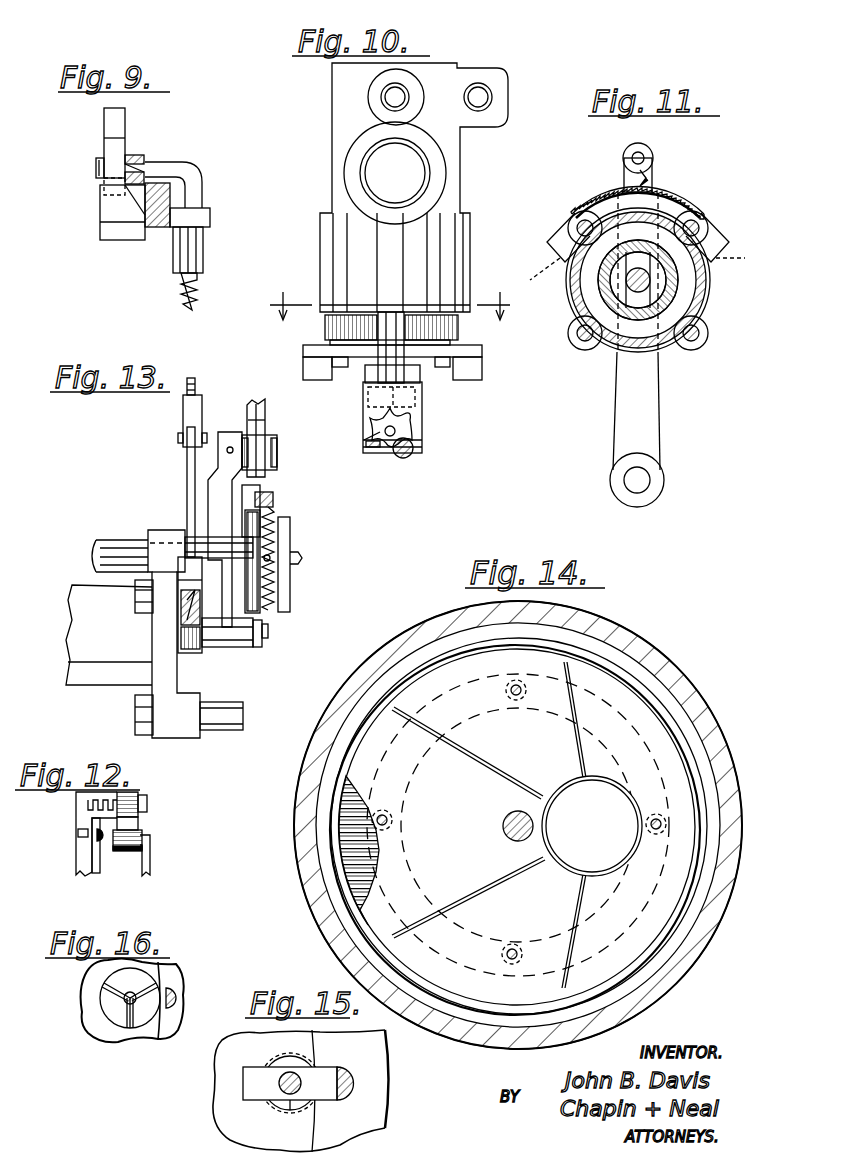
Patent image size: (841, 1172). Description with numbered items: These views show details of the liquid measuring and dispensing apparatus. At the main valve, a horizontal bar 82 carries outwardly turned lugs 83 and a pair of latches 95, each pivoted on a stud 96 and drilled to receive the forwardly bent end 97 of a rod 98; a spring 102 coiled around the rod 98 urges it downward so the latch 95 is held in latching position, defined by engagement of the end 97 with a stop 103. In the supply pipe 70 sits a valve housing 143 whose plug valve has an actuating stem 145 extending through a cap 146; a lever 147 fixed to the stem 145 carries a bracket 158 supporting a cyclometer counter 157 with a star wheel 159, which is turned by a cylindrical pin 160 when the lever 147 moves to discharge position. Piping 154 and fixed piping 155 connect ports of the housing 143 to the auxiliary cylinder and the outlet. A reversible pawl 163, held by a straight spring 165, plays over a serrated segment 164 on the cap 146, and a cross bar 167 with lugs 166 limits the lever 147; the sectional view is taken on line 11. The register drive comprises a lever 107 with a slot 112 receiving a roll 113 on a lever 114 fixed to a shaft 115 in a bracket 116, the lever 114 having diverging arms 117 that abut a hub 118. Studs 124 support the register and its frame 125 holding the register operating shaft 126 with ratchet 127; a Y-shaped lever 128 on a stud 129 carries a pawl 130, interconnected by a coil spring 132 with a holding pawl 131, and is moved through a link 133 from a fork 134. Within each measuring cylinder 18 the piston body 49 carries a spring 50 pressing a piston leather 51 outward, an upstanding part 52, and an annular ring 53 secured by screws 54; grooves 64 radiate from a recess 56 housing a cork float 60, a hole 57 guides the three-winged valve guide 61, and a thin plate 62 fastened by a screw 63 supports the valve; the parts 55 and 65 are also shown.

In FIG. 9, the latch 95 is at (104, 148).
In FIG. 9, the stud 96 is at (96, 172).
In FIG. 9, the stop 103 is at (138, 154).
In FIG. 9, the lug 83 is at (100, 228).
In FIG. 9, the horizontal bar 82 is at (160, 222).
In FIG. 9, the bent end of rod 97 is at (174, 171).
In FIG. 9, the rod 98 is at (192, 195).
In FIG. 9, the spring 102 is at (200, 290).
In FIG. 10, the valve housing 143 is at (365, 250).
In FIG. 10, the fixed piping 155 is at (382, 100).
In FIG. 10, the piping 154 is at (491, 99).
In FIG. 10, the supply pipe 70 is at (425, 172).
In FIG. 10, the section line 11- 11 is at (391, 305).
In FIG. 10, the serrated segment 164 is at (350, 330).
In FIG. 11, the serrated segment 164 is at (680, 192).
In FIG. 12, the serrated segment 164 is at (128, 853).
In FIG. 10, the reversible pawl 163 is at (392, 325).
In FIG. 11, the reversible pawl 163 is at (636, 172).
In FIG. 12, the reversible pawl 163 is at (147, 822).
In FIG. 10, the lug 166 is at (315, 366).
In FIG. 11, the lug 166 is at (649, 263).
In FIG. 10, the cross bar 167 is at (365, 358).
In FIG. 11, the cross bar 167 is at (712, 228).
In FIG. 10, the lever 147 is at (424, 388).
In FIG. 11, the lever 147 is at (644, 436).
In FIG. 12, the lever 147 is at (82, 855).
In FIG. 10, the star wheel 159 is at (412, 424).
In FIG. 10, the bracket 158 is at (414, 437).
In FIG. 10, the counter 157 is at (364, 444).
In FIG. 10, the cylindrical pin 160 is at (402, 458).
In FIG. 11, the cap 146 is at (712, 322).
In FIG. 12, the cap 146 is at (150, 860).
In FIG. 11, the actuating stem 145 is at (650, 283).
In FIG. 11, the spring 165 is at (652, 178).
In FIG. 12, the spring 165 is at (100, 860).
In FIG. 13, the bracket 116 is at (133, 634).
In FIG. 13, the shaft 115 is at (120, 550).
In FIG. 13, the stud 124 is at (135, 598).
In FIG. 13, the diverging arm 117 is at (190, 595).
In FIG. 13, the hub 118 is at (188, 655).
In FIG. 13, the fork 134 is at (190, 416).
In FIG. 13, the link 133 is at (187, 468).
In FIG. 13, the lever 114 is at (230, 430).
In FIG. 13, the lever 107 is at (262, 406).
In FIG. 13, the slot 112 is at (262, 420).
In FIG. 13, the roll 113 is at (277, 445).
In FIG. 13, the Y-shaped lever 128 is at (252, 490).
In FIG. 13, the pawl 130 is at (274, 500).
In FIG. 13, the ratchet 127 is at (258, 555).
In FIG. 13, the frame 125 is at (286, 598).
In FIG. 13, the coil spring 132 is at (275, 587).
In FIG. 13, the register operating shaft 126 is at (303, 558).
In FIG. 13, the stud 129 is at (264, 632).
In FIG. 13, the holding pawl 131 is at (268, 648).
In FIG. 14, the measuring cylinder 18 is at (306, 820).
In FIG. 14, the piston leather 51 is at (332, 778).
In FIG. 14, the spring 50 is at (340, 865).
In FIG. 14, the gear segment 55 is at (334, 848).
In FIG. 14, the central upstanding cylindrical part 52 is at (418, 778).
In FIG. 16, the central upstanding cylindrical part 52 is at (118, 1042).
In FIG. 15, the central upstanding cylindrical part 52 is at (218, 1118).
In FIG. 14, the piston body 49 is at (437, 834).
In FIG. 14, the screw 54 is at (524, 683).
In FIG. 16, the screw 54 is at (176, 992).
In FIG. 15, the screw 54 is at (352, 1084).
In FIG. 14, the groove 64 is at (497, 772).
In FIG. 14, the cylindrical recess 56 is at (569, 777).
In FIG. 14, the cork float 60 is at (592, 826).
In FIG. 14, the center pin 65 is at (508, 834).
In FIG. 16, the annular ring 53 is at (163, 1032).
In FIG. 15, the annular ring 53 is at (375, 1112).
In FIG. 16, the hole 57 is at (108, 1020).
In FIG. 15, the hole 57 is at (286, 1058).
In FIG. 16, the valve guide 61 is at (115, 1000).
In FIG. 15, the valve guide 61 is at (290, 1110).
In FIG. 16, the screw 63 is at (148, 1038).
In FIG. 15, the screw 63 is at (280, 1094).
In FIG. 15, the thin plate 62 is at (250, 1085).